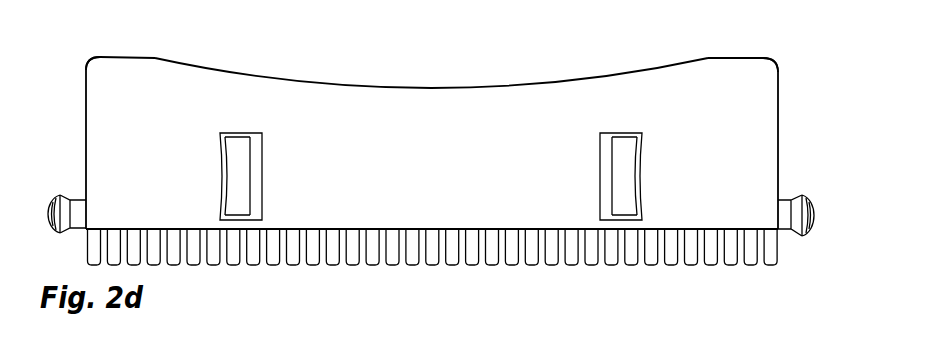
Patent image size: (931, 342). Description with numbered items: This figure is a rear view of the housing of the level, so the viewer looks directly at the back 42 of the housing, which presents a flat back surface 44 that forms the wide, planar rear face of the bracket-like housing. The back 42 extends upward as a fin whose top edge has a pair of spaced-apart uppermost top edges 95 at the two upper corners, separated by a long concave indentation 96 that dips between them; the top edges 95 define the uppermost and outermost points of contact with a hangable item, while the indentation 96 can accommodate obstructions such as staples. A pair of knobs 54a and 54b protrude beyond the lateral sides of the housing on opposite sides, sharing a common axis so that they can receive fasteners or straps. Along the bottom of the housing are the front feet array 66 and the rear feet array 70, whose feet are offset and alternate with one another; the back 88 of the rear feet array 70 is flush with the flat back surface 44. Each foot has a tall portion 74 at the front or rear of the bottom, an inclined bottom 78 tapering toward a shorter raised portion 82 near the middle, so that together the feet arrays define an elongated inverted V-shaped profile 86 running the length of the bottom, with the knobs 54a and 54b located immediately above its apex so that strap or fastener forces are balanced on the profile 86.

The back 42 is at (302, 113).
The flat back surface 44 is at (387, 125).
The concave indentation 96 is at (433, 77).
The top edges 95 is at (128, 56).
The knob 54a is at (800, 195).
The knob 54b is at (55, 195).
The front feet array 66 is at (472, 256).
The rear feet array 70 is at (366, 256).
The back of the rear feet array 88 is at (616, 256).
The inclined bottom 78 is at (525, 3).
The shorter raised portion 82 is at (592, 2).
The inverted V-shaped profile 86 is at (627, 0).
The tall portion 74 is at (688, 0).